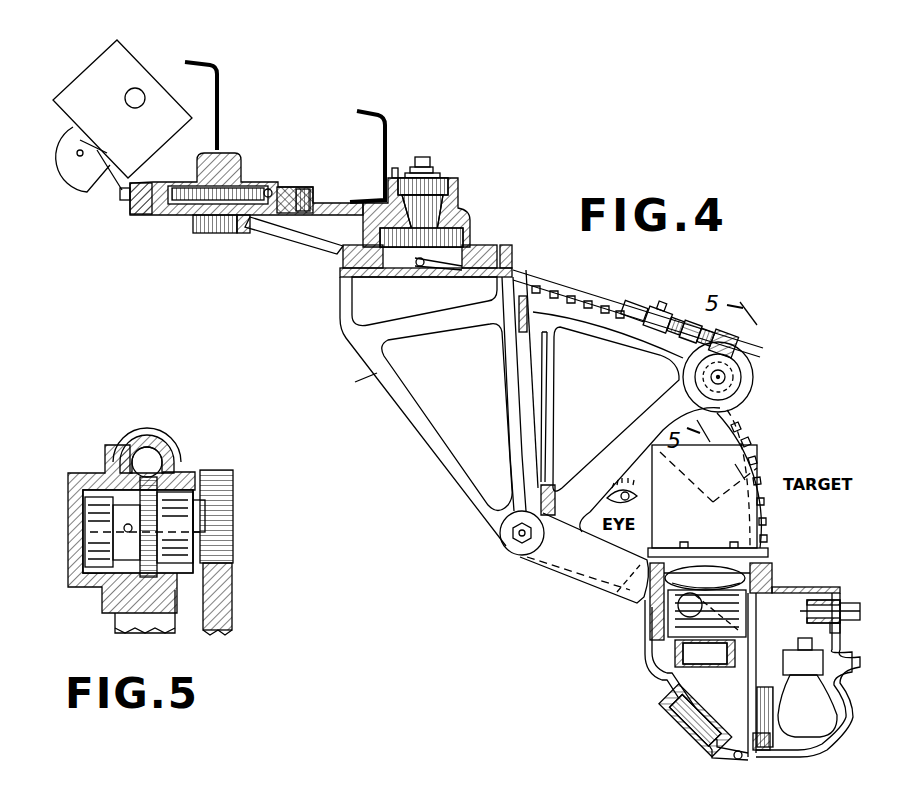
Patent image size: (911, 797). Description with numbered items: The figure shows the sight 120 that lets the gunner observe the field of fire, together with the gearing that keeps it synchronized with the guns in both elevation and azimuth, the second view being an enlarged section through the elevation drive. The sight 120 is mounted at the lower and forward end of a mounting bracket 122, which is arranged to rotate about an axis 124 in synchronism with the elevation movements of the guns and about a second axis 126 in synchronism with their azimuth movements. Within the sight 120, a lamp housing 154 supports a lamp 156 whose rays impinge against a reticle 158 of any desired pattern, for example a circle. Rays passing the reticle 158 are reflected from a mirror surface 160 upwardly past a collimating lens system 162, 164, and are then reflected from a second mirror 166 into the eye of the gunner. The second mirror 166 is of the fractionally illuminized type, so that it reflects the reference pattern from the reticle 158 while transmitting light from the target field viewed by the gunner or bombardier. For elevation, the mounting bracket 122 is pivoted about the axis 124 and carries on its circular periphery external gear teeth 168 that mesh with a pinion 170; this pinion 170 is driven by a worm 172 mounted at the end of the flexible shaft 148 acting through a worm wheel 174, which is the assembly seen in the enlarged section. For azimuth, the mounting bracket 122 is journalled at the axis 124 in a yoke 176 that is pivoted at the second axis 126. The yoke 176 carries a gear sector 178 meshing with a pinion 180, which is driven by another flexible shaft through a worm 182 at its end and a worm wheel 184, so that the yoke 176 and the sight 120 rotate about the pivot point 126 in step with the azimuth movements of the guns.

In FIG. 4, the sight 120 is at (907, 640).
In FIG. 4, the mounting bracket 122 is at (435, 452).
In FIG. 4, the axis 124 is at (518, 534).
In FIG. 4, the second axis 126 is at (424, 158).
In FIG. 4, the flexible shaft 148 is at (563, 288).
In FIG. 4, the lamp housing 154 is at (803, 588).
In FIG. 4, the lamp 156 is at (818, 712).
In FIG. 4, the reticle 158 is at (760, 752).
In FIG. 4, the mirror surface 160 is at (697, 730).
In FIG. 4, the collimating lens system 162 is at (667, 672).
In FIG. 4, the collimating lens system 164 is at (678, 567).
In FIG. 4, the second mirror 166 is at (757, 468).
In FIG. 4, the external gear teeth 168 is at (747, 404).
In FIG. 5, the external gear teeth 168 is at (227, 600).
In FIG. 4, the pinion 170 is at (757, 370).
In FIG. 5, the pinion 170 is at (230, 527).
In FIG. 4, the worm 172 is at (733, 343).
In FIG. 5, the worm 172 is at (150, 460).
In FIG. 4, the worm wheel 174 is at (693, 380).
In FIG. 5, the worm wheel 174 is at (173, 480).
In FIG. 4, the yoke 176 is at (347, 385).
In FIG. 4, the gear sector 178 is at (290, 232).
In FIG. 4, the pinion 180 is at (207, 234).
In FIG. 4, the worm 182 is at (281, 186).
In FIG. 4, the worm wheel 184 is at (247, 187).